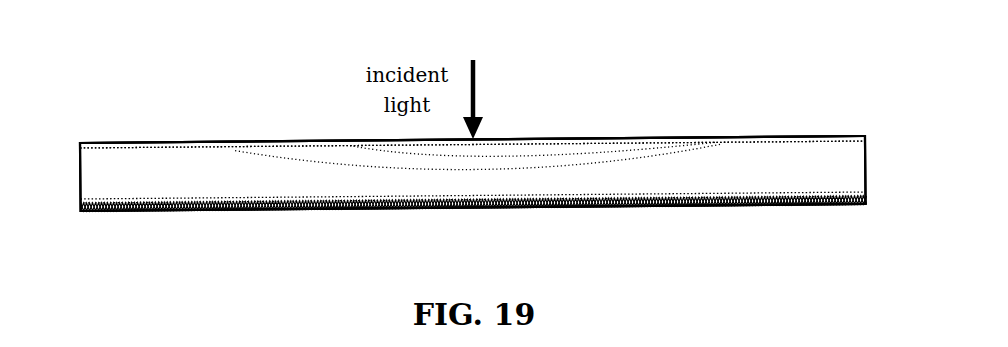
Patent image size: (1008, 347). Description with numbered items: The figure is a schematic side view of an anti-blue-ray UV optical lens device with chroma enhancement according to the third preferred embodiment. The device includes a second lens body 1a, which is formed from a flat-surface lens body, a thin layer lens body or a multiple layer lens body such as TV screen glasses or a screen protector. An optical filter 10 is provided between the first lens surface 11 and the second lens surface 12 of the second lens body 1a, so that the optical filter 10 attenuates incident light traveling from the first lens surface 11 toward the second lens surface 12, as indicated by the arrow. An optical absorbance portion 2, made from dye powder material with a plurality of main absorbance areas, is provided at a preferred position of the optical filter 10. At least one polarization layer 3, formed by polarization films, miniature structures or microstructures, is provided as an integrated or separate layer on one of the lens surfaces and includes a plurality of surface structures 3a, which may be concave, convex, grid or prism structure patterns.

The second lens body 1a is at (716, 100).
The optical absorbance portion 2 is at (563, 141).
The polarization layer 3 is at (108, 193).
The surface structures 3a is at (181, 209).
The optical filter 10 is at (628, 139).
The first lens surface 11 is at (742, 138).
The second lens surface 12 is at (740, 206).